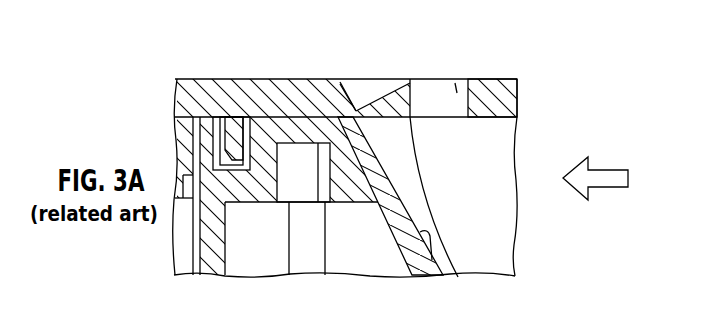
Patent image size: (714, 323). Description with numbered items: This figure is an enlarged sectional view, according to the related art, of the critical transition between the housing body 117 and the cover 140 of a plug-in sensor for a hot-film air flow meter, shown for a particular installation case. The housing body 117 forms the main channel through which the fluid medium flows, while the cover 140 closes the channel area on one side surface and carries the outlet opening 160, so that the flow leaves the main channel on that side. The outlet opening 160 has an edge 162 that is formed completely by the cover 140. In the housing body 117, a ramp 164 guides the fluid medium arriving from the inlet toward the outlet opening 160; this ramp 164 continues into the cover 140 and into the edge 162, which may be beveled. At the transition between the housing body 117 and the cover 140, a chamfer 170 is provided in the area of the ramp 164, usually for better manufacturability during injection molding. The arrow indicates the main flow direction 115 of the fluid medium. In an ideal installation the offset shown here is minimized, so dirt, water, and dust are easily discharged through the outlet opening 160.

The main flow direction 115 is at (608, 177).
The housing body 117 is at (345, 197).
The cover 140 is at (517, 92).
The outlet opening 160 is at (434, 141).
The edge 162 is at (409, 58).
The ramp 164 is at (374, 160).
The chamfer 170 is at (383, 72).